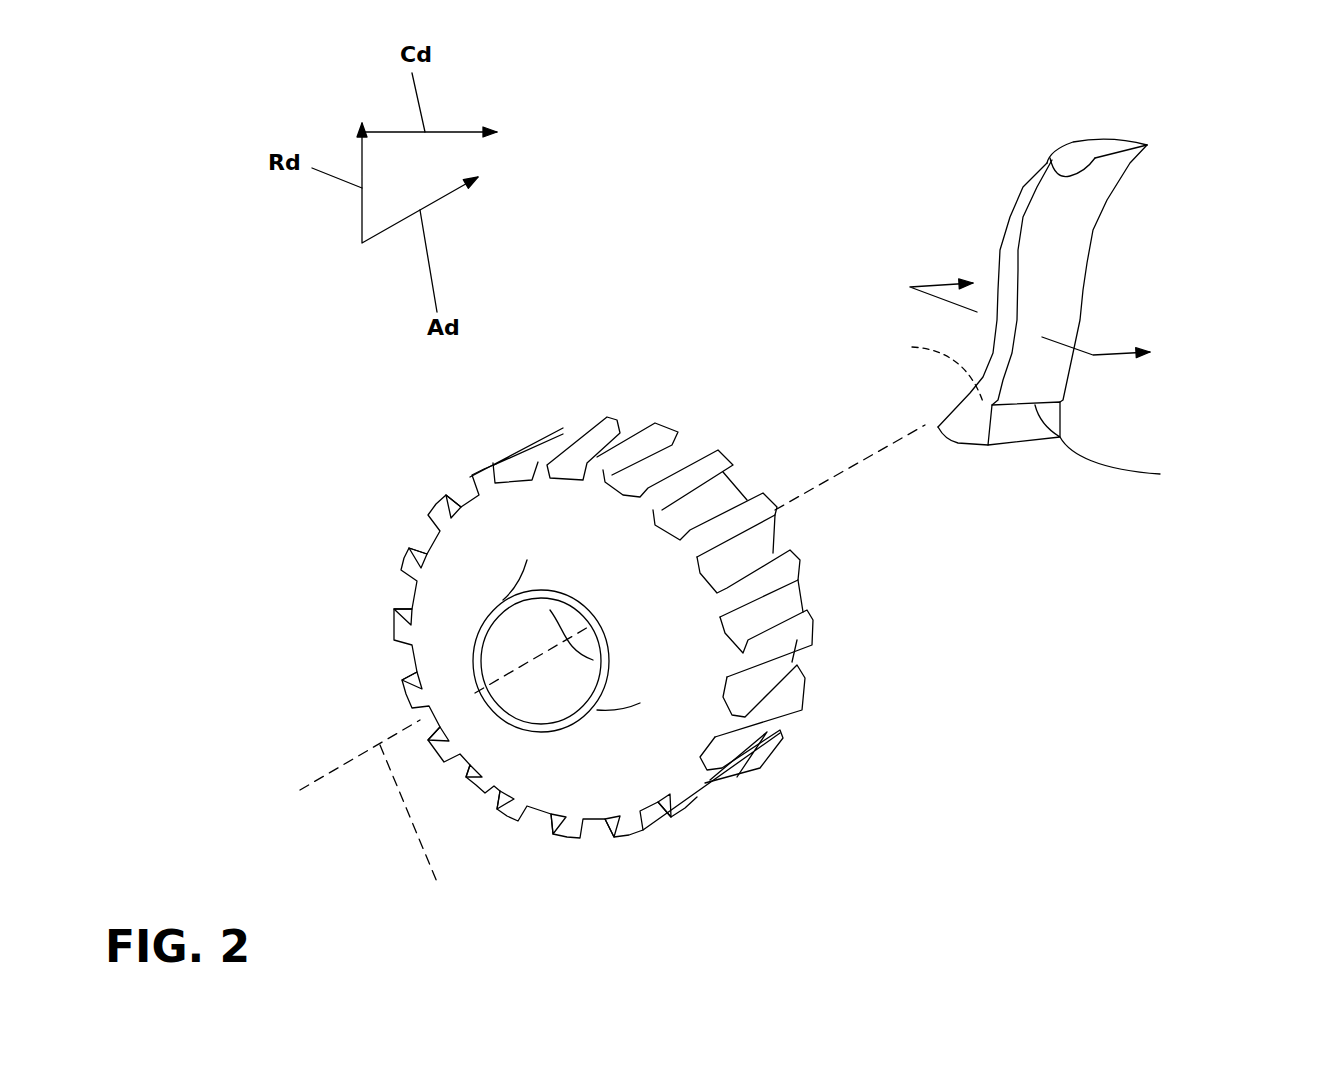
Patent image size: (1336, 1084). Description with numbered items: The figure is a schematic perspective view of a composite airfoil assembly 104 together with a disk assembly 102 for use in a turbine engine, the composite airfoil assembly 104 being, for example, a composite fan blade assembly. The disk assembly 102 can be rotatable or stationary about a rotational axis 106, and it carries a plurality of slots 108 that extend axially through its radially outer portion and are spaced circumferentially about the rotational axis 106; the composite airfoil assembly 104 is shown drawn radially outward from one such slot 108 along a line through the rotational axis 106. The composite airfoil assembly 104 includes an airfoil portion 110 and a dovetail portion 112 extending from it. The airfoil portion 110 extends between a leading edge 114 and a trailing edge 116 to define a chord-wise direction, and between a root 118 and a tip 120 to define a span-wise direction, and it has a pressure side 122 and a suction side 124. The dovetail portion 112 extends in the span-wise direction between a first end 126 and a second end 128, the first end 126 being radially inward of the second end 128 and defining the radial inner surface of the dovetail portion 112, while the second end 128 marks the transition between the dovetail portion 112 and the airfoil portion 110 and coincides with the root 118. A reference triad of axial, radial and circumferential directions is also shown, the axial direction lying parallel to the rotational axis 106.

The disk assembly 102 is at (634, 640).
The composite airfoil assembly 104 is at (1080, 303).
The rotational axis 106 is at (612, 665).
The slots 108 is at (688, 453).
The airfoil portion 110 is at (1047, 197).
The dovetail portion 112 is at (1007, 443).
The leading edge 114 is at (1000, 252).
The trailing edge 116 is at (1085, 270).
The root 118 is at (1135, 462).
The tip 120 is at (1075, 143).
The pressure side 122 is at (1050, 163).
The suction side 124 is at (1100, 137).
The first end 126 is at (960, 443).
The second end 128 is at (924, 369).